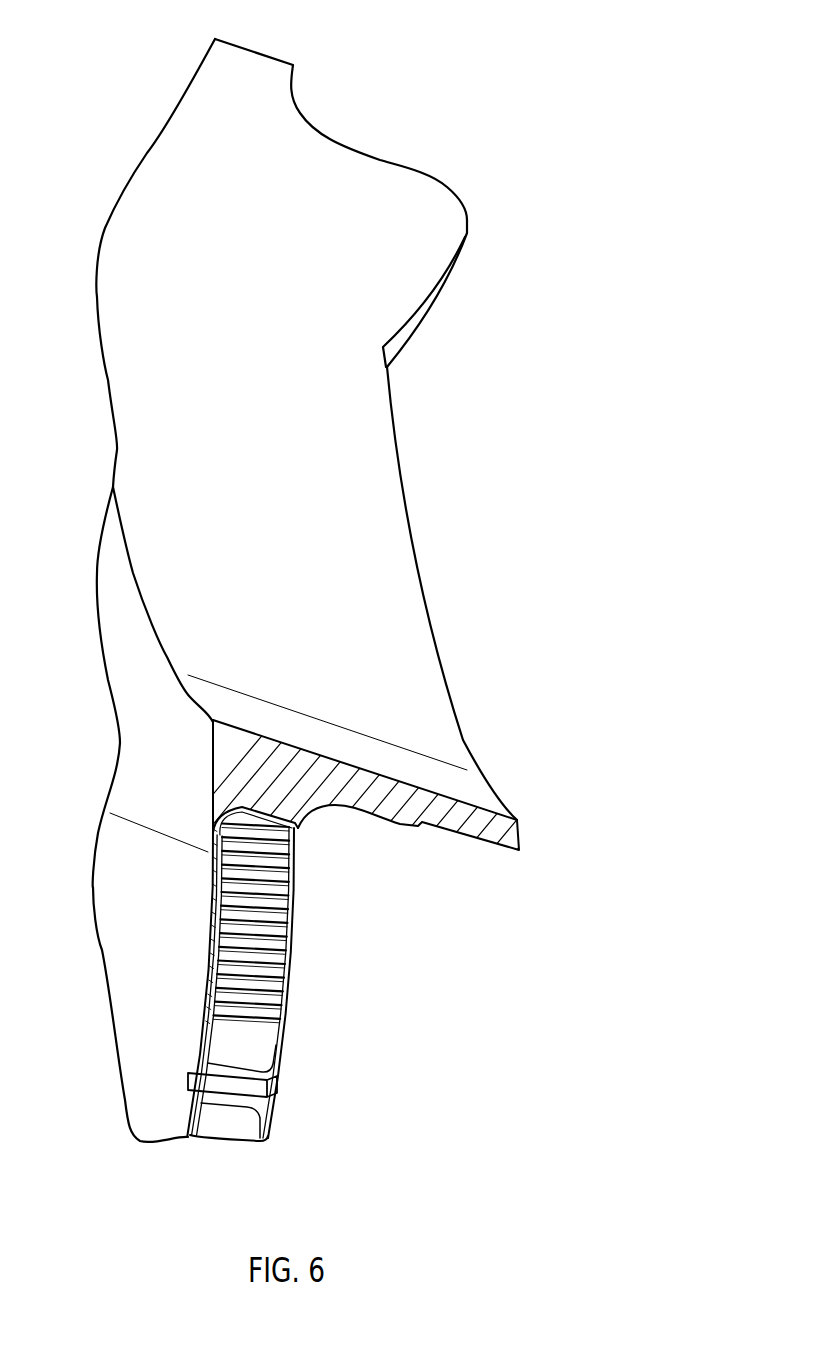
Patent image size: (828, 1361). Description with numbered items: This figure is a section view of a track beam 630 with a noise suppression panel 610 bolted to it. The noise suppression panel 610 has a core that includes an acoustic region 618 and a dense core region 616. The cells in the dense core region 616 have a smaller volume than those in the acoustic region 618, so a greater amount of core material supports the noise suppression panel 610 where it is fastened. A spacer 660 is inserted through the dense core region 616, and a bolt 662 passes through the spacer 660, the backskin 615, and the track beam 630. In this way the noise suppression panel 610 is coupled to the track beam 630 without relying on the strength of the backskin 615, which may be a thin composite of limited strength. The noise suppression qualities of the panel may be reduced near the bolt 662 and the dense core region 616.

The noise suppression panel 610 is at (295, 935).
The backskin 615 is at (218, 1035).
The dense core region 616 is at (312, 1043).
The acoustic region 618 is at (318, 882).
The track beam 630 is at (203, 1005).
The spacer 660 is at (217, 1107).
The bolt 662 is at (242, 1100).